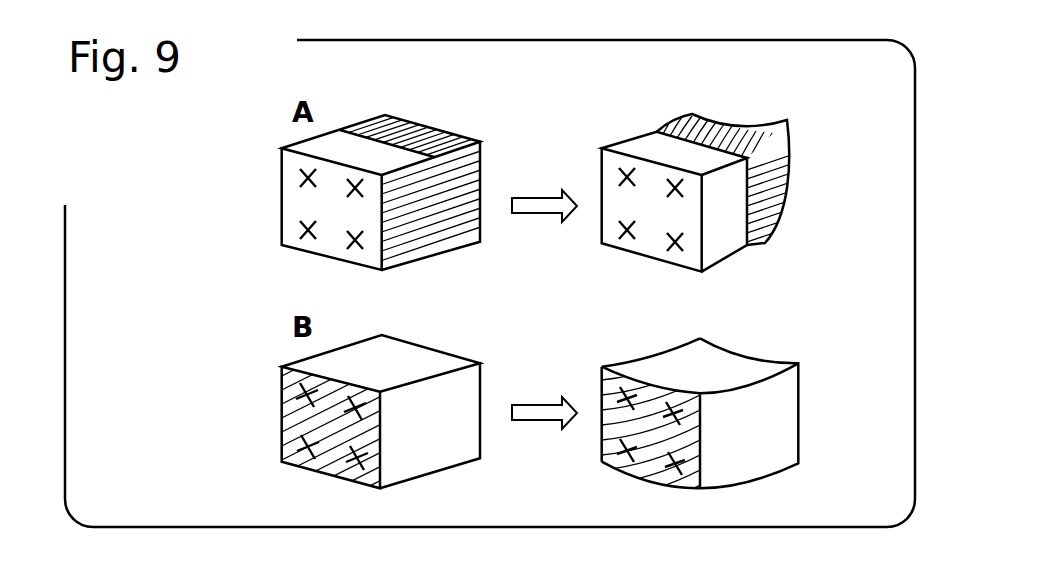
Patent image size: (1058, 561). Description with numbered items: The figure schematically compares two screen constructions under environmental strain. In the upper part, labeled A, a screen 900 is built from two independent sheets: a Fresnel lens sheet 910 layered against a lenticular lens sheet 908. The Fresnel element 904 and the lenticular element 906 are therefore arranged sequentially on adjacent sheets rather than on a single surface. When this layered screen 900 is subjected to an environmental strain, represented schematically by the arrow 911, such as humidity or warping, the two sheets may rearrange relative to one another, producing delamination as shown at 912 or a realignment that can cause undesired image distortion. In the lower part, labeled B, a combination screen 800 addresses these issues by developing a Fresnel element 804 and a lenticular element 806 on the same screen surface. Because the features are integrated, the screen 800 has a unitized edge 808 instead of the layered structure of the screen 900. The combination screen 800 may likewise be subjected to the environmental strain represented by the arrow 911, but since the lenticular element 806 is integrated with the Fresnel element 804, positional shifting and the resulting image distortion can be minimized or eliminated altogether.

The screen 900 is at (792, 79).
The combination screen 800 is at (793, 311).
The Fresnel element 904 is at (403, 137).
The lenticular element 906 is at (303, 228).
The lenticular lens sheet 908 is at (400, 267).
The Fresnel lens sheet 910 is at (458, 248).
The arrow 911 is at (534, 198).
The delamination 912 is at (755, 232).
The Fresnel element 804 is at (287, 442).
The lenticular element 806 is at (303, 398).
The unitized edge 808 is at (437, 473).